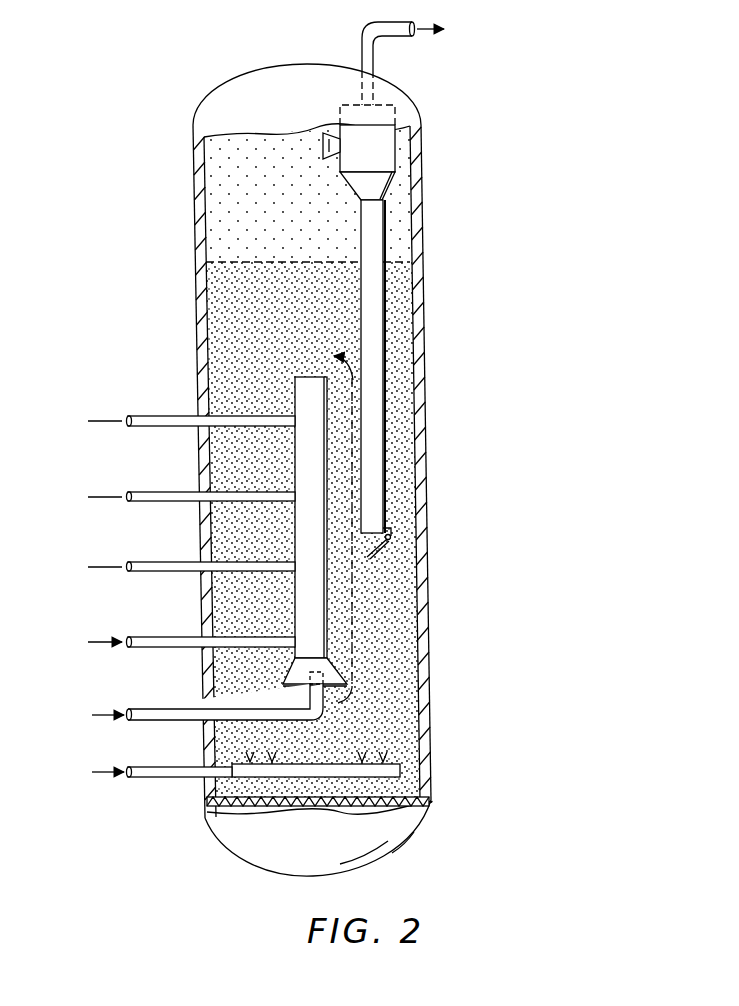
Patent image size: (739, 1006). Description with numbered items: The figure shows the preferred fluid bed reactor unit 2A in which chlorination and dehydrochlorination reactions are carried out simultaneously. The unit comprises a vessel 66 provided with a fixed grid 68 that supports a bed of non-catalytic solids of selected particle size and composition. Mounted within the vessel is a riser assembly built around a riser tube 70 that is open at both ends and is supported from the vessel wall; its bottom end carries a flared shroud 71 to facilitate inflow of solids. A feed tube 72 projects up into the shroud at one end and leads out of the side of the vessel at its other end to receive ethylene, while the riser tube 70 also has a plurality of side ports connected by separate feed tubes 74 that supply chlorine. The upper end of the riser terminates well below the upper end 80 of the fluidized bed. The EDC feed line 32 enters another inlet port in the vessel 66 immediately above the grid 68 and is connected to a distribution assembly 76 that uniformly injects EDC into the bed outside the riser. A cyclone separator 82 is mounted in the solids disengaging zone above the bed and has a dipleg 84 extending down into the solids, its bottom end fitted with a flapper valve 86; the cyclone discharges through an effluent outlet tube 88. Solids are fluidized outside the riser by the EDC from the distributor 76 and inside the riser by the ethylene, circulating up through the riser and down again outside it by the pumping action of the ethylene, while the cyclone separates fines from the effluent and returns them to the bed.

The reactor unit 2A is at (436, 603).
The EDC feed line 32 is at (158, 782).
The vessel 66 is at (430, 509).
The fixed grid 68 is at (410, 792).
The riser tube 70 is at (300, 388).
The flared shroud 71 is at (337, 668).
The feed tube 72 is at (163, 709).
The feed tubes 74 is at (182, 495).
The distribution assembly 76 is at (240, 764).
The upper end of the fluidized bed 80 is at (228, 262).
The cyclone separator 82 is at (387, 152).
The dipleg 84 is at (372, 306).
The flapper valve 86 is at (372, 556).
The effluent outlet tube 88 is at (378, 92).